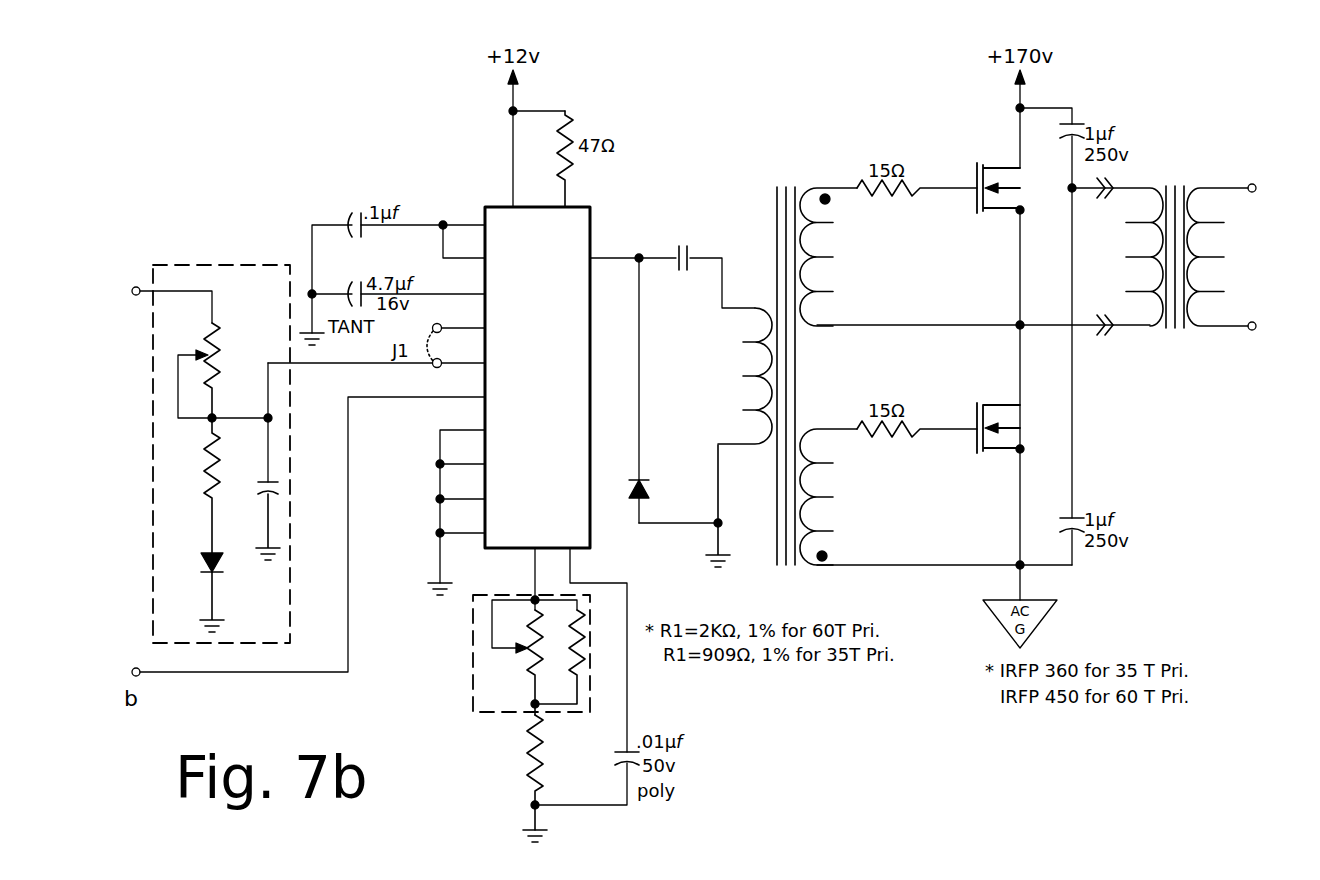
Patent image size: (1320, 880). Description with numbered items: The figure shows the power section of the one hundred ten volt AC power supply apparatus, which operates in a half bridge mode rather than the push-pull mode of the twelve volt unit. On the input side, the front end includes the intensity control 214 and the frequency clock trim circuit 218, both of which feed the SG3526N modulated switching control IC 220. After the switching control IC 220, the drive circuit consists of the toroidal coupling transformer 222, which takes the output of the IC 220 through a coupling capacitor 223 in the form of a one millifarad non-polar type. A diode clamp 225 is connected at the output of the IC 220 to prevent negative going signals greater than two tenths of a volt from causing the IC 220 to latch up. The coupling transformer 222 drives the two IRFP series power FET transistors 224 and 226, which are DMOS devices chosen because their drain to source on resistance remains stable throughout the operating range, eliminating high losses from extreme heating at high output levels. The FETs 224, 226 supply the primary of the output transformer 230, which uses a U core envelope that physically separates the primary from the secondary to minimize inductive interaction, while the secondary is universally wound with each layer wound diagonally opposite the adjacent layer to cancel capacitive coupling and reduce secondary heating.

The intensity control 214 is at (220, 267).
The frequency clock trim circuit 218 is at (469, 690).
The modulated switching control IC 220 is at (552, 468).
The toroidal transformer 222 is at (774, 206).
The coupling capacitor 223 is at (672, 254).
The power FET transistor 224 is at (988, 213).
The diode clamp 225 is at (640, 480).
The power FET transistor 226 is at (988, 454).
The transformer 230 is at (1182, 186).